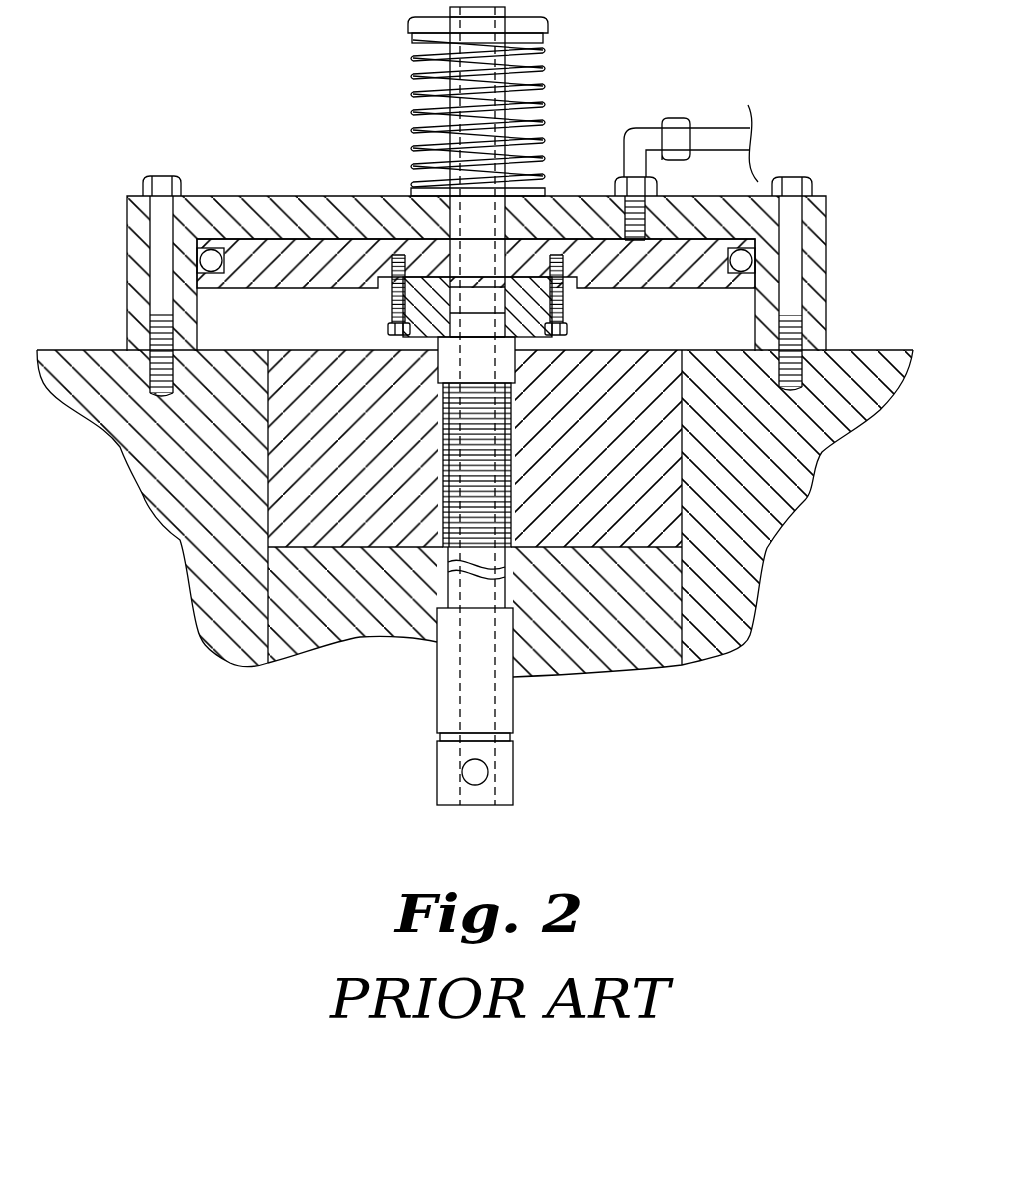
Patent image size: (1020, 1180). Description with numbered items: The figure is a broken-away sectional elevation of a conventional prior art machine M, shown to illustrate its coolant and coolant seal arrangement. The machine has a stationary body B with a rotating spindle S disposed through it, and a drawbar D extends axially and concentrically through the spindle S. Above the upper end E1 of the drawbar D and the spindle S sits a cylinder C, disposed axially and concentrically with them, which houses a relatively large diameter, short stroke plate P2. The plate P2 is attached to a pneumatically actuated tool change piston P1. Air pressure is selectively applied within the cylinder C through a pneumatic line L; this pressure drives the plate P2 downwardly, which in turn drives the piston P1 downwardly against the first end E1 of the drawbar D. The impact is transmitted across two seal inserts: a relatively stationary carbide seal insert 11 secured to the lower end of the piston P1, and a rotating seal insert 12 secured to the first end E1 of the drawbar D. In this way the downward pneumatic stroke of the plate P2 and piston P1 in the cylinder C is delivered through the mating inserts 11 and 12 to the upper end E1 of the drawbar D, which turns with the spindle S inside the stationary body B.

The machine M is at (146, 724).
The stationary body B is at (170, 527).
The spindle S is at (322, 645).
The cylinder C is at (247, 196).
The pneumatic line L is at (643, 128).
The tool change piston P1 is at (420, 120).
The plate P2 is at (310, 288).
The carbide seal insert 11 is at (472, 283).
The upper end of the drawbar E1 is at (438, 354).
The rotating seal insert 12 is at (477, 326).
The drawbar D is at (437, 690).